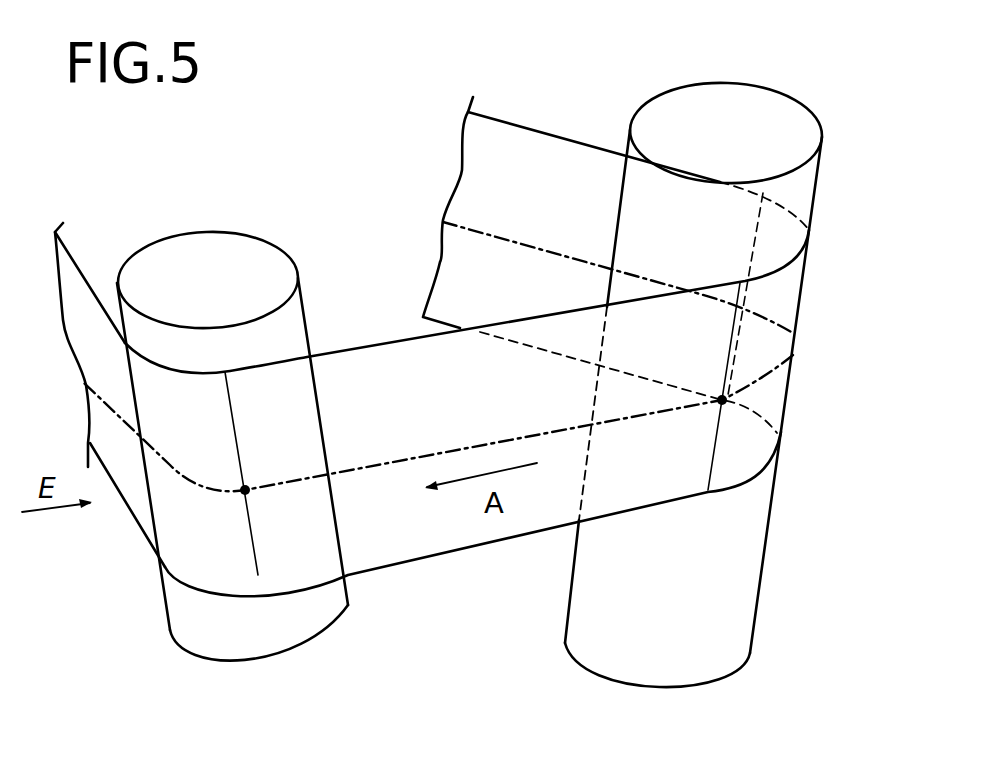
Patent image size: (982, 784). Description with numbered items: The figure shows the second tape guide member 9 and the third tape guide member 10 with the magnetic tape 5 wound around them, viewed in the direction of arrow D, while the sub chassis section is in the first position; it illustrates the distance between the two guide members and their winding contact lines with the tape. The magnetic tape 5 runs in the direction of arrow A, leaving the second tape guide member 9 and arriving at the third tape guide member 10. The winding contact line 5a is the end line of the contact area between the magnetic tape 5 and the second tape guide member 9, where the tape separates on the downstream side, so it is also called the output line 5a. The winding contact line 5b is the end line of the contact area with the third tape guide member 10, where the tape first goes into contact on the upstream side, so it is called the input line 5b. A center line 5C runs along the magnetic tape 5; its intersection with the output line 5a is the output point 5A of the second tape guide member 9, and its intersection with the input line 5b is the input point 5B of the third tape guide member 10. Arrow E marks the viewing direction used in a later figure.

The magnetic tape 5 is at (428, 547).
The output point 5A is at (708, 388).
The input point 5B is at (255, 478).
The center line 5C is at (422, 452).
The winding contact line (output line) 5a is at (718, 452).
The winding contact line (input line) 5b is at (258, 578).
The second tape guide member 9 is at (698, 673).
The third tape guide member 10 is at (280, 647).